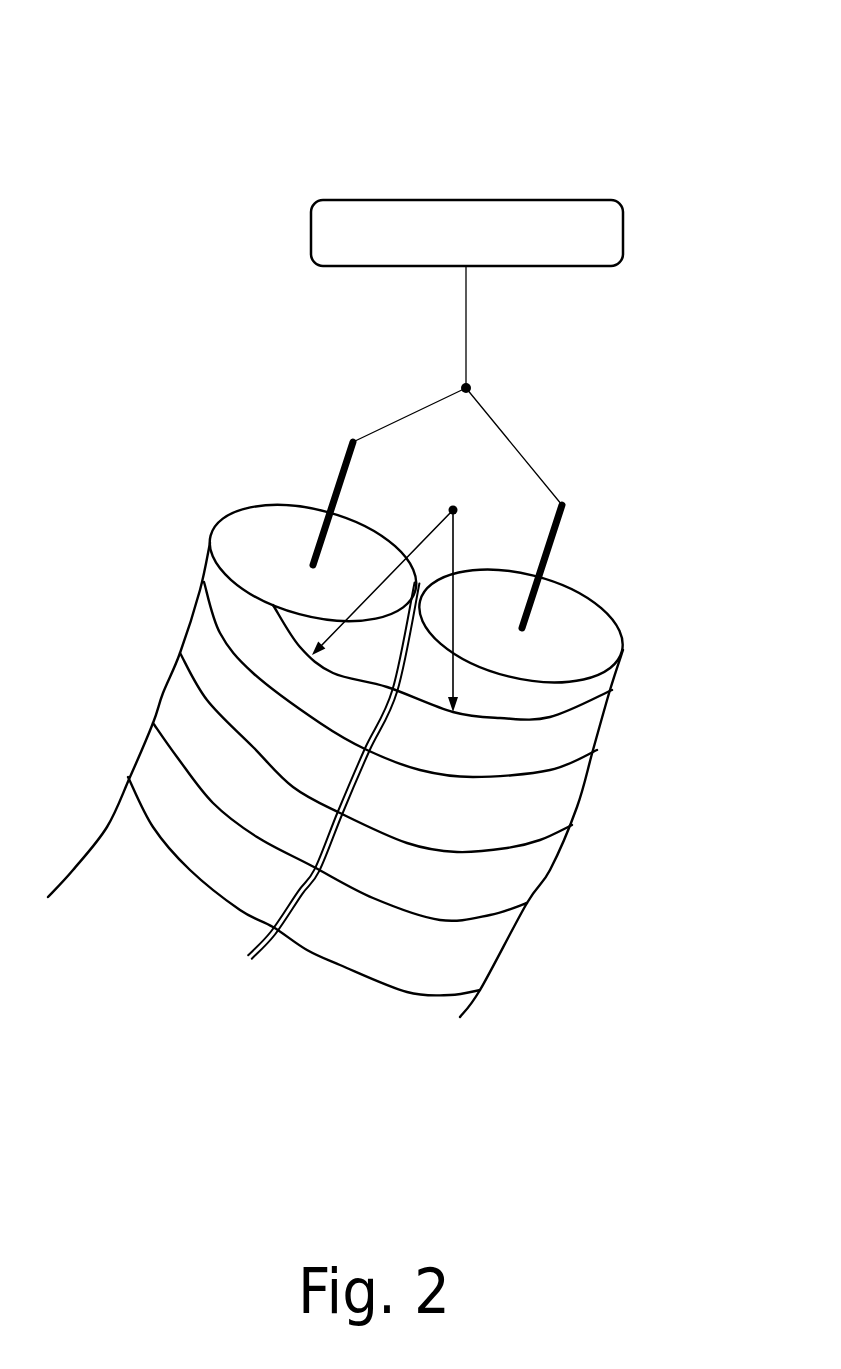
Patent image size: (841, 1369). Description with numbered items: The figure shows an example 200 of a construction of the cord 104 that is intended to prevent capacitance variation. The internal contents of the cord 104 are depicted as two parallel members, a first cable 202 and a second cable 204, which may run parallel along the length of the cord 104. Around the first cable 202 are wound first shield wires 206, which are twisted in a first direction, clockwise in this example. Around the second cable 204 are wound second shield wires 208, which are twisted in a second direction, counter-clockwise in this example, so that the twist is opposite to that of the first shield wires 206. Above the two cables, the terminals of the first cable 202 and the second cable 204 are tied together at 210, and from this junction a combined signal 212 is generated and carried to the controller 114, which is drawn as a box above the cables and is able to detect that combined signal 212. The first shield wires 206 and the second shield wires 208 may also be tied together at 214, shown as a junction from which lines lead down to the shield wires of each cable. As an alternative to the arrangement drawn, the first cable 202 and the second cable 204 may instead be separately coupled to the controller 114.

The example 200 is at (677, 88).
The cord 104 is at (180, 505).
The controller 114 is at (455, 256).
The first cable 202 is at (338, 486).
The second cable 204 is at (546, 555).
The first shield wires 206 is at (196, 684).
The second shield wires 208 is at (555, 770).
The tie point of cable terminals 210 is at (466, 388).
The combined signal 212 is at (466, 330).
The tie point of shield wires 214 is at (453, 510).